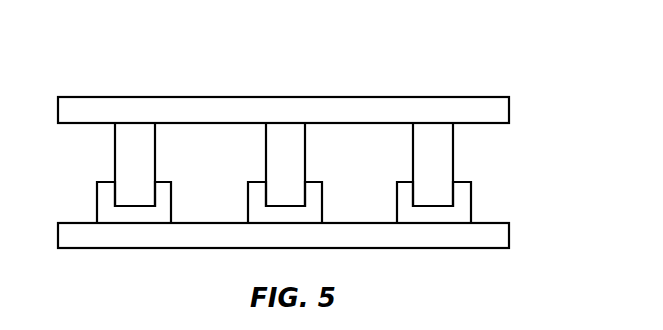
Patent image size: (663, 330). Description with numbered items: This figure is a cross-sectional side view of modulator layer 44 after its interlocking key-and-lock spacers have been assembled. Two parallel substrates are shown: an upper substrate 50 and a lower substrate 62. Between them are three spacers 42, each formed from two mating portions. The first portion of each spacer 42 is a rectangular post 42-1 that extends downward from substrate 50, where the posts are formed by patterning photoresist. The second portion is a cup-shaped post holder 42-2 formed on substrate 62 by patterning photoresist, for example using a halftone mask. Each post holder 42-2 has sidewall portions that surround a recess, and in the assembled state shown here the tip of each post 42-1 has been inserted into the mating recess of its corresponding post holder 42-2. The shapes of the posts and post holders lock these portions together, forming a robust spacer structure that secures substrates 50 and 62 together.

The modulator layer 44 is at (92, 78).
The substrate 50 is at (503, 110).
The substrate 62 is at (500, 238).
The spacer 42 is at (92, 135).
The rectangular post 42-1 is at (148, 137).
The cup-shaped post holder 42-2 is at (168, 201).